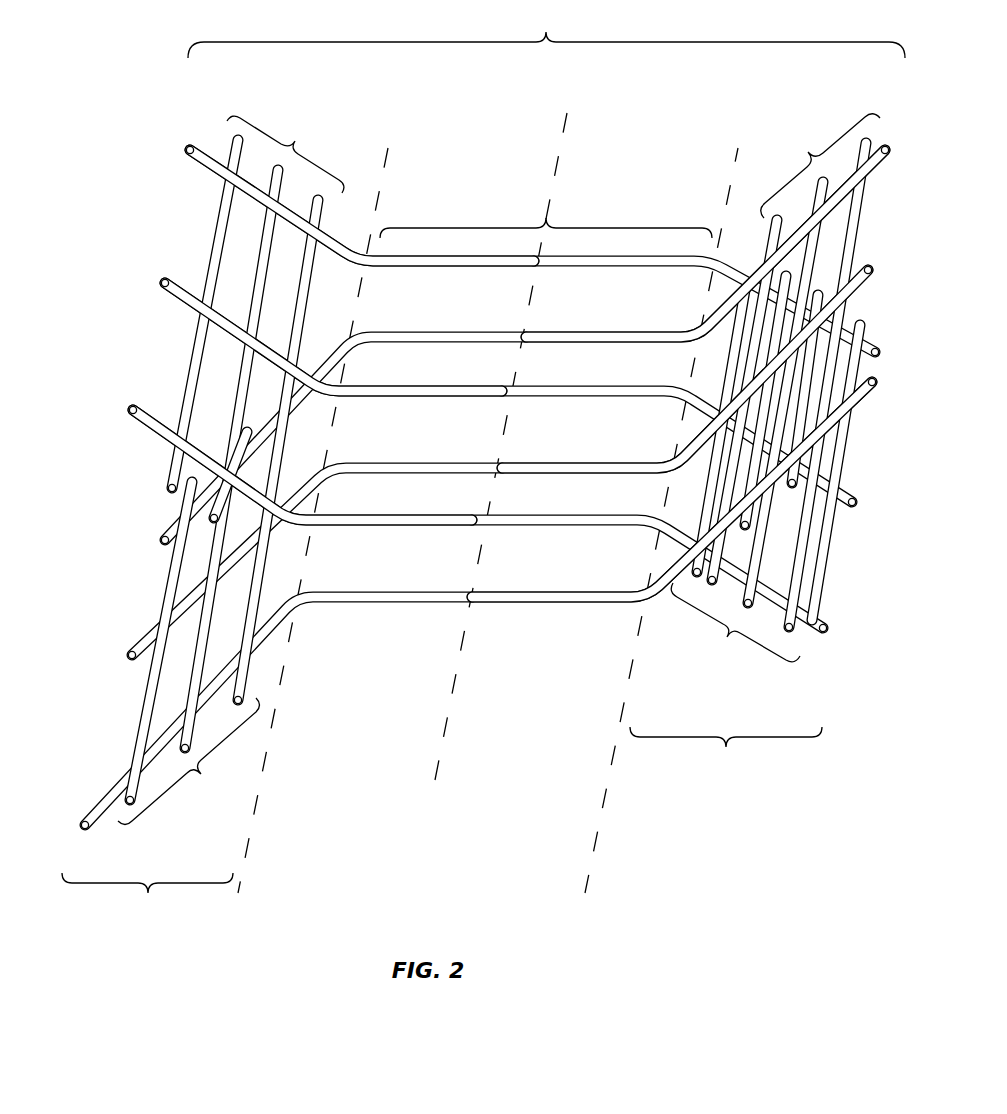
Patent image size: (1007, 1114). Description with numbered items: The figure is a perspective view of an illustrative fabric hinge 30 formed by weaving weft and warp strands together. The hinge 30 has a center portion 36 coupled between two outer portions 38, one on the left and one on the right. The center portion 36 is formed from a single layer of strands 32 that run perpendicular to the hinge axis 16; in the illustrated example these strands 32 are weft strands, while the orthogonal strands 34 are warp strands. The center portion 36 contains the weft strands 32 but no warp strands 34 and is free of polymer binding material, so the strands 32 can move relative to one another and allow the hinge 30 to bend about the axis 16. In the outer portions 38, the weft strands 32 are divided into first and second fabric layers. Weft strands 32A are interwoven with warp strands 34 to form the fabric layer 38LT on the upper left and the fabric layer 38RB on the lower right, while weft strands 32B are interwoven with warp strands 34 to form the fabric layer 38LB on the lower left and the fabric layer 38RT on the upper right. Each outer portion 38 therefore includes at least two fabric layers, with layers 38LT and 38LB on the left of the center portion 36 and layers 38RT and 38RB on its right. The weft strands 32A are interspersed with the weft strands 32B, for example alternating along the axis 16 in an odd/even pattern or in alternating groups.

The hinge axis 16 is at (568, 119).
The fabric hinge 30 is at (546, 33).
The strands 32 is at (488, 500).
The weft strands 32A is at (200, 162).
The weft strands 32B is at (163, 542).
The warp strands 34 is at (258, 293).
The center portion 36 is at (546, 218).
The outer portions 38 is at (442, 824).
The fabric layer 38LT is at (285, 154).
The fabric layer 38LB is at (189, 761).
The fabric layer 38RT is at (820, 166).
The fabric layer 38RB is at (735, 625).